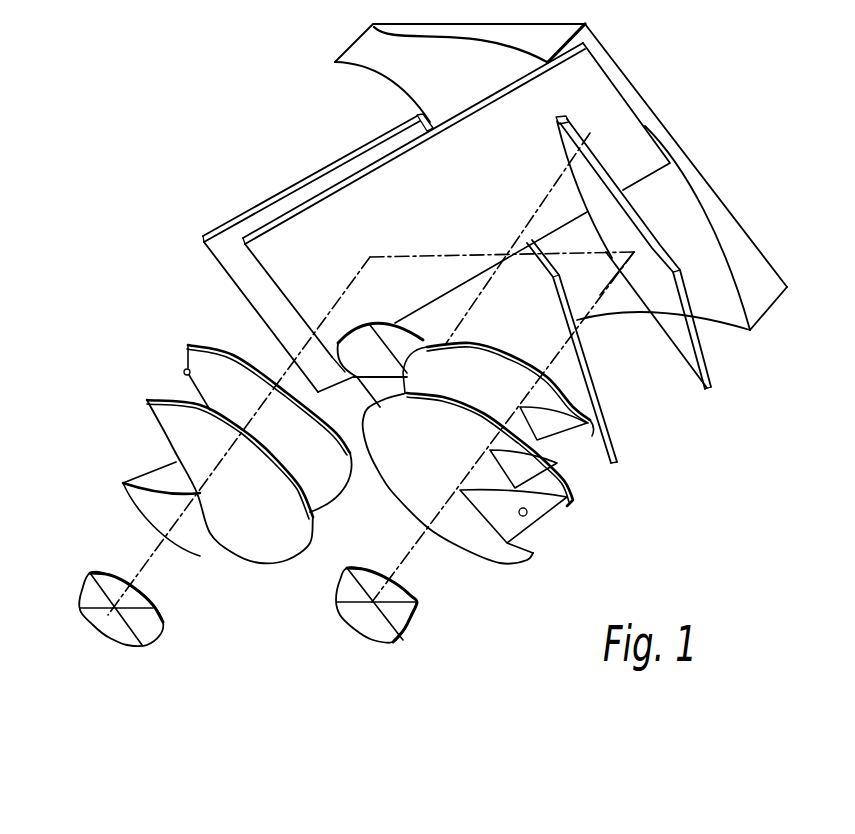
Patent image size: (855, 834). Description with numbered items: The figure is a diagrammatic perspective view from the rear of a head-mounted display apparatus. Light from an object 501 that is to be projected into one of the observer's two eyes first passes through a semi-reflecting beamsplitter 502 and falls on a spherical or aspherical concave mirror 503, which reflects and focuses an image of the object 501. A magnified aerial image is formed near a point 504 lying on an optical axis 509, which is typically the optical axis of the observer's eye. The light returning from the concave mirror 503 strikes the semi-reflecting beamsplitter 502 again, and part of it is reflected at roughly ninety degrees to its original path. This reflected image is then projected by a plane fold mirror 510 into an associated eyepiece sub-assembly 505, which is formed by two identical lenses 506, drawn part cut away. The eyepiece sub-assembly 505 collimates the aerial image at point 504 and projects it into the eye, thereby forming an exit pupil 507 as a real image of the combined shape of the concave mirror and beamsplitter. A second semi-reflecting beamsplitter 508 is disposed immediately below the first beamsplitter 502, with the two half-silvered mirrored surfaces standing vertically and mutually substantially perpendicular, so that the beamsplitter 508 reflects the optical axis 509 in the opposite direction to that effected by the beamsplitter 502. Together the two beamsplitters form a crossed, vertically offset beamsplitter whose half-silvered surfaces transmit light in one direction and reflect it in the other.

The object 501 is at (380, 335).
The semi-reflecting beamsplitter 502 is at (682, 177).
The concave mirror 503 is at (431, 65).
The point 504 is at (387, 397).
The eyepiece sub-assembly 505 is at (357, 469).
The lenses 506 is at (360, 490).
The exit pupil 507 is at (228, 628).
The second semi-reflecting beamsplitter 508 is at (619, 351).
The optical axis 509 is at (379, 374).
The plane fold mirror 510 is at (489, 217).